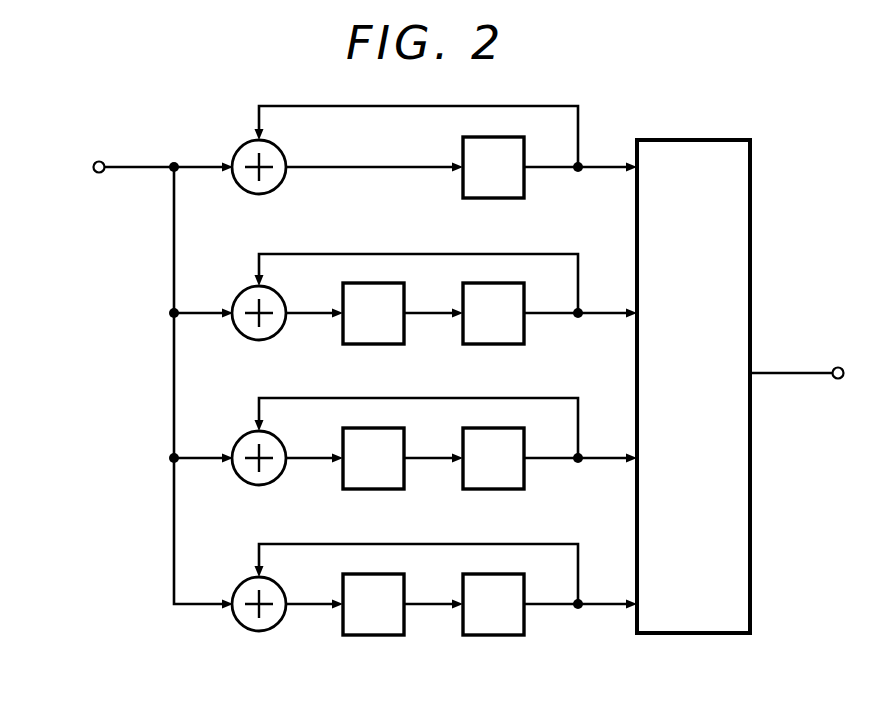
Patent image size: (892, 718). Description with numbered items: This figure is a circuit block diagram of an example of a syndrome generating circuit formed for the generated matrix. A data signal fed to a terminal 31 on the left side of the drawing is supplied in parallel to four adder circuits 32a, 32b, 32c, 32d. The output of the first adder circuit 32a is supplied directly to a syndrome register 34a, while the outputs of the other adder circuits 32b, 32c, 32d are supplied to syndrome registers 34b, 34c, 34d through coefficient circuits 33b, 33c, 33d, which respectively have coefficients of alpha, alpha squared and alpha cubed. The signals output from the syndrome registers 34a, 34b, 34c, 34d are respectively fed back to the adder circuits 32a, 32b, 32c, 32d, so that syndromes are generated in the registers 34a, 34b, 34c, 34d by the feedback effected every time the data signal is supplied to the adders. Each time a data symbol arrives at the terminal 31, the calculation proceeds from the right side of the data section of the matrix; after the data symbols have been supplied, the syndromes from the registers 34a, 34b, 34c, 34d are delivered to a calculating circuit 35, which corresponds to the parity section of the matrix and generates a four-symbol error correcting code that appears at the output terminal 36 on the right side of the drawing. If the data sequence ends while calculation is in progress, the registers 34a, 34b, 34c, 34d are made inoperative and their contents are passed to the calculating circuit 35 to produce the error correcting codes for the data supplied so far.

The terminal 31 is at (100, 173).
The adder circuit 32a is at (268, 193).
The adder circuit 32b is at (268, 339).
The adder circuit 32c is at (268, 484).
The adder circuit 32d is at (268, 630).
The coefficient circuit 33b is at (380, 345).
The coefficient circuit 33c is at (380, 490).
The coefficient circuit 33d is at (380, 636).
The syndrome register 34a is at (500, 199).
The syndrome register 34b is at (500, 345).
The syndrome register 34c is at (500, 490).
The syndrome register 34d is at (500, 636).
The calculating circuit 35 is at (700, 634).
The output terminal 36 is at (838, 379).